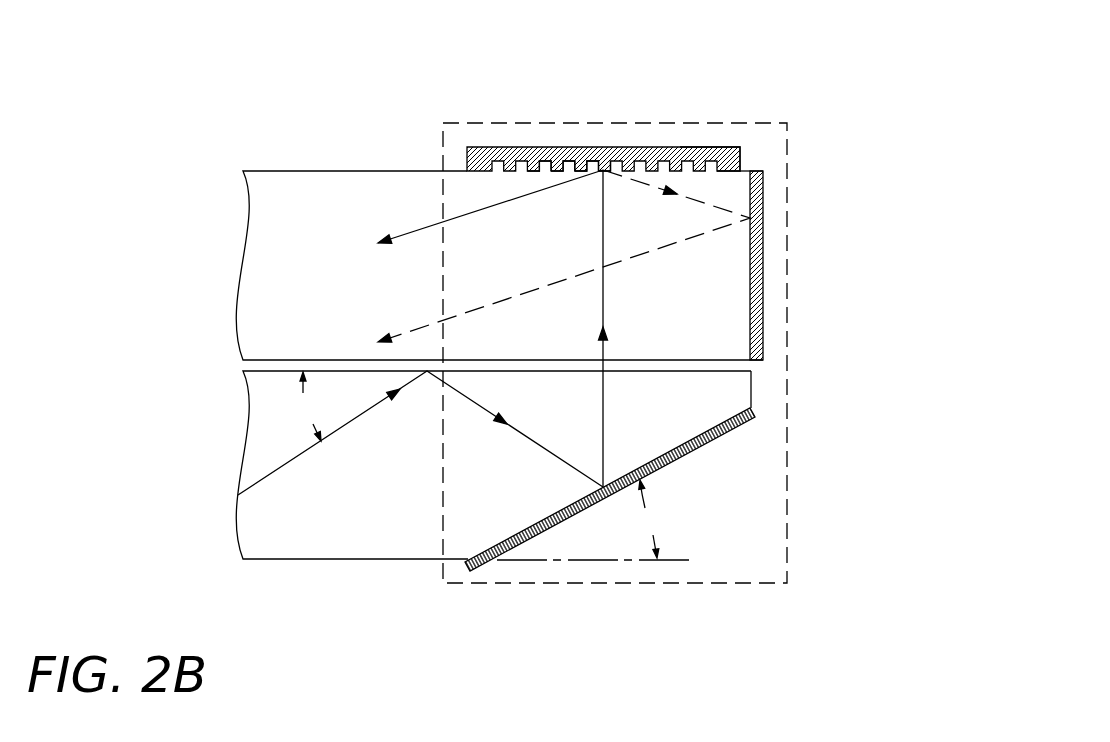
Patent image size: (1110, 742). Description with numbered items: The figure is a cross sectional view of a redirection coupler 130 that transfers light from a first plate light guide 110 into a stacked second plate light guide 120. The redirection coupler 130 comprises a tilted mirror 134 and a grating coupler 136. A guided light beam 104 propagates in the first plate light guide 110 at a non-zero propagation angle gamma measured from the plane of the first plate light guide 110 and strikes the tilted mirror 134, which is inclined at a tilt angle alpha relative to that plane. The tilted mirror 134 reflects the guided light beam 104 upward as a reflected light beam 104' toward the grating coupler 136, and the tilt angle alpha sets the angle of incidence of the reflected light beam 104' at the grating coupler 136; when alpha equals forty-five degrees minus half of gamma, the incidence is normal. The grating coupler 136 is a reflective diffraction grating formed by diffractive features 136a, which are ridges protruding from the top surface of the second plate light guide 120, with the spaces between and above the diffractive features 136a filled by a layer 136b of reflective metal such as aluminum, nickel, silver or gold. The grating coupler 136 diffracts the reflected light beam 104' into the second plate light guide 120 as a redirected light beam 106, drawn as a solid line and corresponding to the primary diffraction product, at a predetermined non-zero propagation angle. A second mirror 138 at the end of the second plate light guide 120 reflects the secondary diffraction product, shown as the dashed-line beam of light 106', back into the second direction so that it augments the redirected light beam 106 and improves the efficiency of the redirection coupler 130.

The redirection coupler 130 is at (773, 63).
The grating coupler 136 is at (526, 133).
The diffractive features 136a is at (580, 157).
The layer of reflective material 136b is at (730, 157).
The second mirror 138 is at (775, 263).
The tilted mirror 134 is at (670, 466).
The second plate light guide 120 is at (357, 283).
The first plate light guide 110 is at (357, 483).
The guided light beam 104 is at (386, 433).
The reflected light beam 104' is at (641, 328).
The redirected light beam 106 is at (458, 206).
The beam of light of secondary diffraction product 106' is at (564, 256).